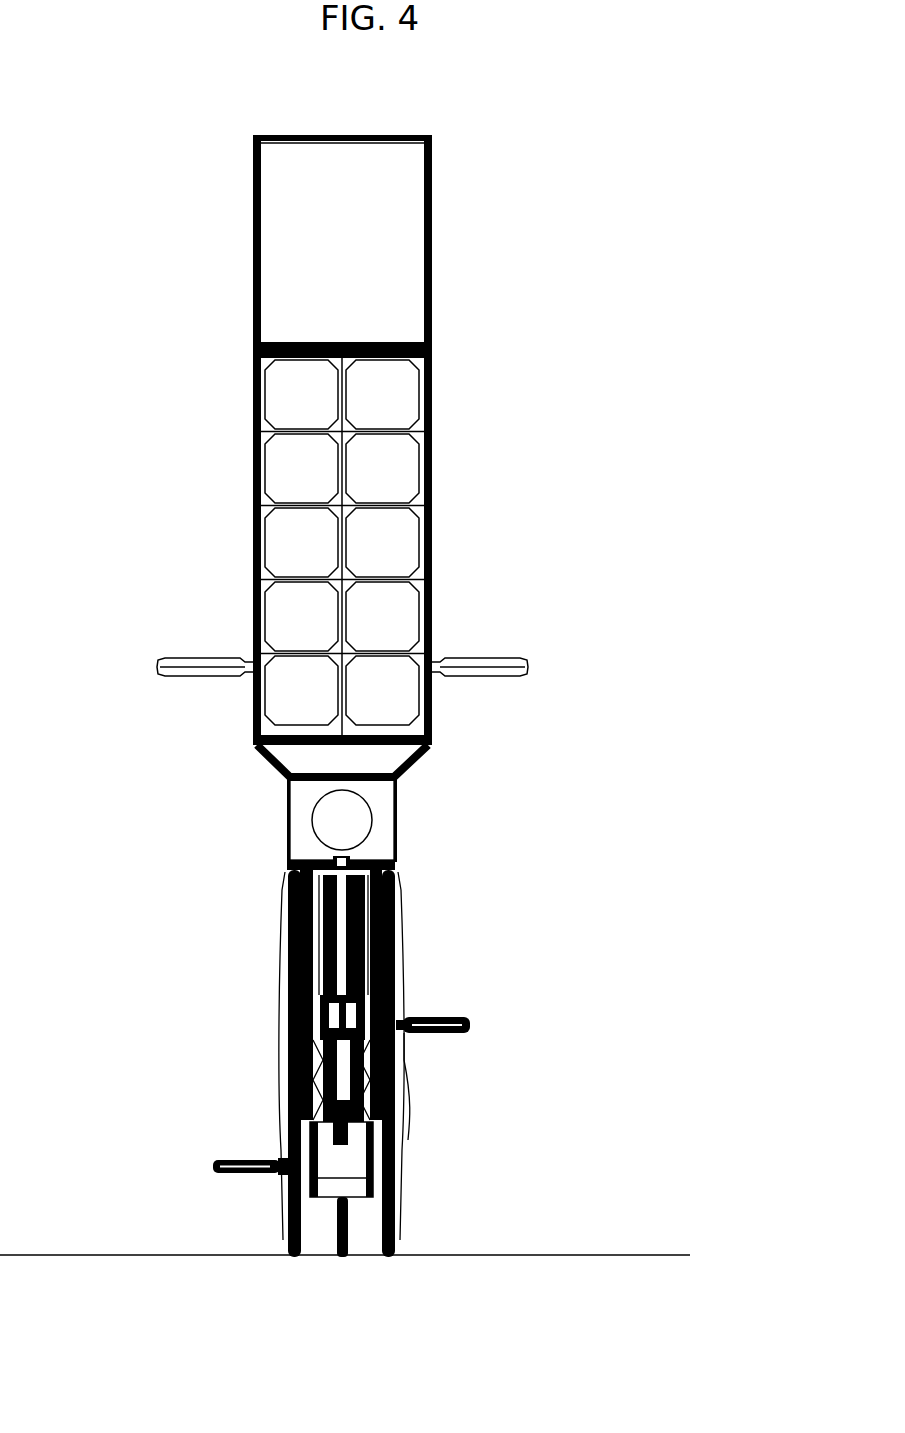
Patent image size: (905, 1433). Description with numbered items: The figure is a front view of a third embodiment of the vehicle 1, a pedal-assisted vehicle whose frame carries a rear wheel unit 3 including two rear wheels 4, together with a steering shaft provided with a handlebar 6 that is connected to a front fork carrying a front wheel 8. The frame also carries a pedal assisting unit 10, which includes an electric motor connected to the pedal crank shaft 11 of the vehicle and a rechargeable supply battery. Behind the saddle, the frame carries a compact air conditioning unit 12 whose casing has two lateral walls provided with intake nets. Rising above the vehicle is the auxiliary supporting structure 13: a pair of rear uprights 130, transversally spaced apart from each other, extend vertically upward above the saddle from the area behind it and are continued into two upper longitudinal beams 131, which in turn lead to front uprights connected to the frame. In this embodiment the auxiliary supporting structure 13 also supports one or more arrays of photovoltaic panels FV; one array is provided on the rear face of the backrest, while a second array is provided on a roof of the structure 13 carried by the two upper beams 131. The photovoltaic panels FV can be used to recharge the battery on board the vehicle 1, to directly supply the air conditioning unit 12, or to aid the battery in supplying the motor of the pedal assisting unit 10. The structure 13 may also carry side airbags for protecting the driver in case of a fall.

The vehicle 1 is at (520, 260).
The auxiliary supporting structure 13 is at (232, 250).
The upper longitudinal beams 131 is at (282, 143).
The rear uprights 130 is at (255, 398).
The photovoltaic panels FV is at (315, 540).
The handlebar 6 is at (490, 660).
The air conditioning unit 12 is at (290, 836).
The rear wheel unit 3 is at (425, 1236).
The rear wheels 4 is at (292, 1222).
The pedal crank shaft 11 is at (437, 1018).
The pedal assisting unit 10 is at (393, 1165).
The front wheel 8 is at (341, 1272).